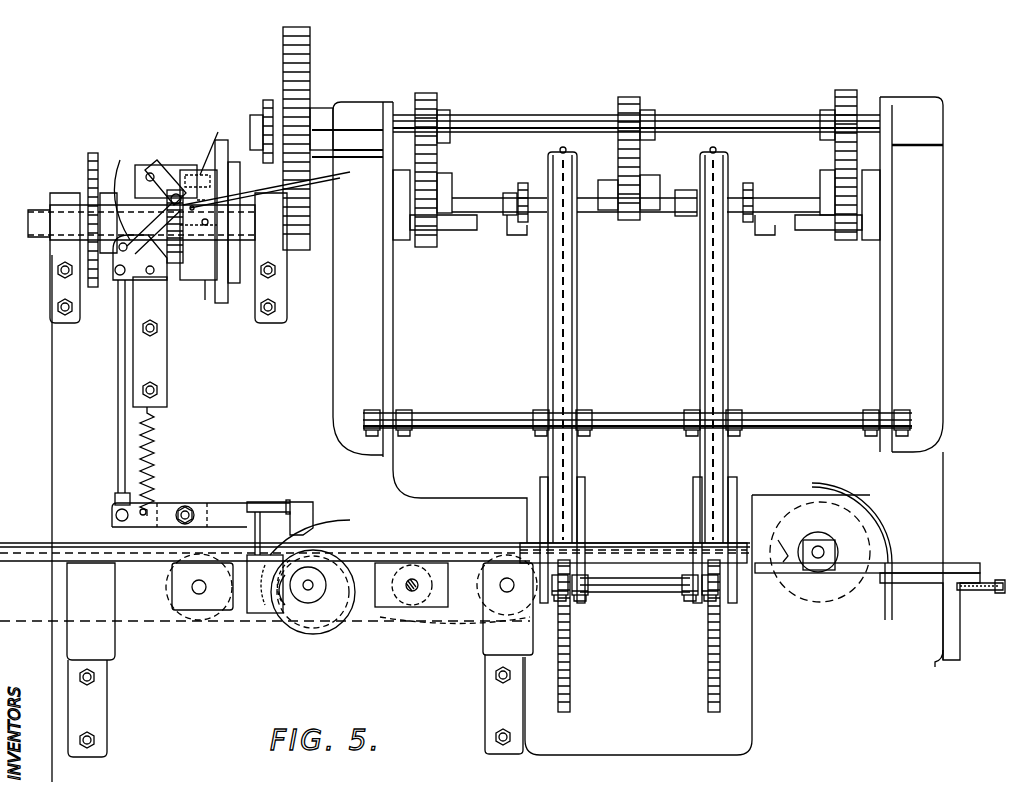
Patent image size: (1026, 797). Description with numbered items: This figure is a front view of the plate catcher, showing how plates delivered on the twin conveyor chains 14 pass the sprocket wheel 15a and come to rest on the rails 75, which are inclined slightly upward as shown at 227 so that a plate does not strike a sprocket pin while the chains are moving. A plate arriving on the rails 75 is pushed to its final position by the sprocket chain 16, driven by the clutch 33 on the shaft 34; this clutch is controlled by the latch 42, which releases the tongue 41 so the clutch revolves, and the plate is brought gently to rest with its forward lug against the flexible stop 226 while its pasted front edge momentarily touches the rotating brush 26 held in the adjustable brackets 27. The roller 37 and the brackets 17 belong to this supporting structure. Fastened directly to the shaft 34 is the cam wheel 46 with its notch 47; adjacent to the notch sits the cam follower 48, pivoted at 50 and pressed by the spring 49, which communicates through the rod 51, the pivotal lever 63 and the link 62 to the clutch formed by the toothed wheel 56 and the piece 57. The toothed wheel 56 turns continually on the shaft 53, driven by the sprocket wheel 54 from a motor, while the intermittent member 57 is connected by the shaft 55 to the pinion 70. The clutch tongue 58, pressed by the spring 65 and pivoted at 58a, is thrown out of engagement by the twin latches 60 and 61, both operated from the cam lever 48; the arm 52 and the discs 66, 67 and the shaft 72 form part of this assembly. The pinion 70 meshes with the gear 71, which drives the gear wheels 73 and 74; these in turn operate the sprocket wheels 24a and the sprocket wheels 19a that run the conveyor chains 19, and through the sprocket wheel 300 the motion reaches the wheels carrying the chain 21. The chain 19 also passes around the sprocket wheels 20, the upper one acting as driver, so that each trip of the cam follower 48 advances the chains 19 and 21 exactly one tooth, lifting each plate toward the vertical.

The twin conveyor chains 14 is at (145, 621).
The sprocket wheel 15a is at (420, 615).
The sprocket chain 16 is at (462, 613).
The bracket 17 is at (517, 625).
The conveyor chain 19 is at (703, 312).
The sprocket wheels 19a is at (725, 112).
The sprocket wheels 20 is at (705, 612).
The conveyor chain 21 is at (705, 685).
The sprocket wheels 24a is at (762, 168).
The rotating brush 26 is at (786, 605).
The adjustable brackets 27 is at (970, 563).
The clutch 33 is at (330, 602).
The shaft 34 is at (312, 582).
The roller 37 is at (414, 578).
The tongue 41 is at (300, 570).
The latch 42 is at (295, 610).
The cam wheel 46 is at (325, 632).
The notch 47 is at (322, 530).
The cam follower 48 is at (312, 512).
The spring 49 is at (155, 445).
The pivot 50 is at (180, 505).
The rod 51 is at (118, 442).
The lever 52 is at (150, 162).
The shaft 53 is at (28, 240).
The sprocket wheel 54 is at (88, 160).
The shaft 55 is at (330, 248).
The toothed wheel 56 is at (163, 198).
The clutch piece 57 is at (207, 307).
The tongue 58 is at (213, 132).
The pivot 58a is at (276, 186).
The latch 60 is at (182, 188).
The latch 61 is at (183, 282).
The link 62 is at (117, 190).
The pivotal lever 63 is at (130, 278).
The spring 65 is at (265, 191).
The disc 66 is at (234, 283).
The plate 67 is at (227, 325).
The pinion 70 is at (290, 258).
The gear 71 is at (310, 55).
The shaft 72 is at (682, 115).
The gear wheel 73 is at (856, 65).
The gear wheel 74 is at (629, 97).
The rails 75 is at (595, 542).
The flexible stop 226 is at (785, 535).
The upward inclination 227 is at (632, 545).
The sprocket wheel 300 is at (268, 100).